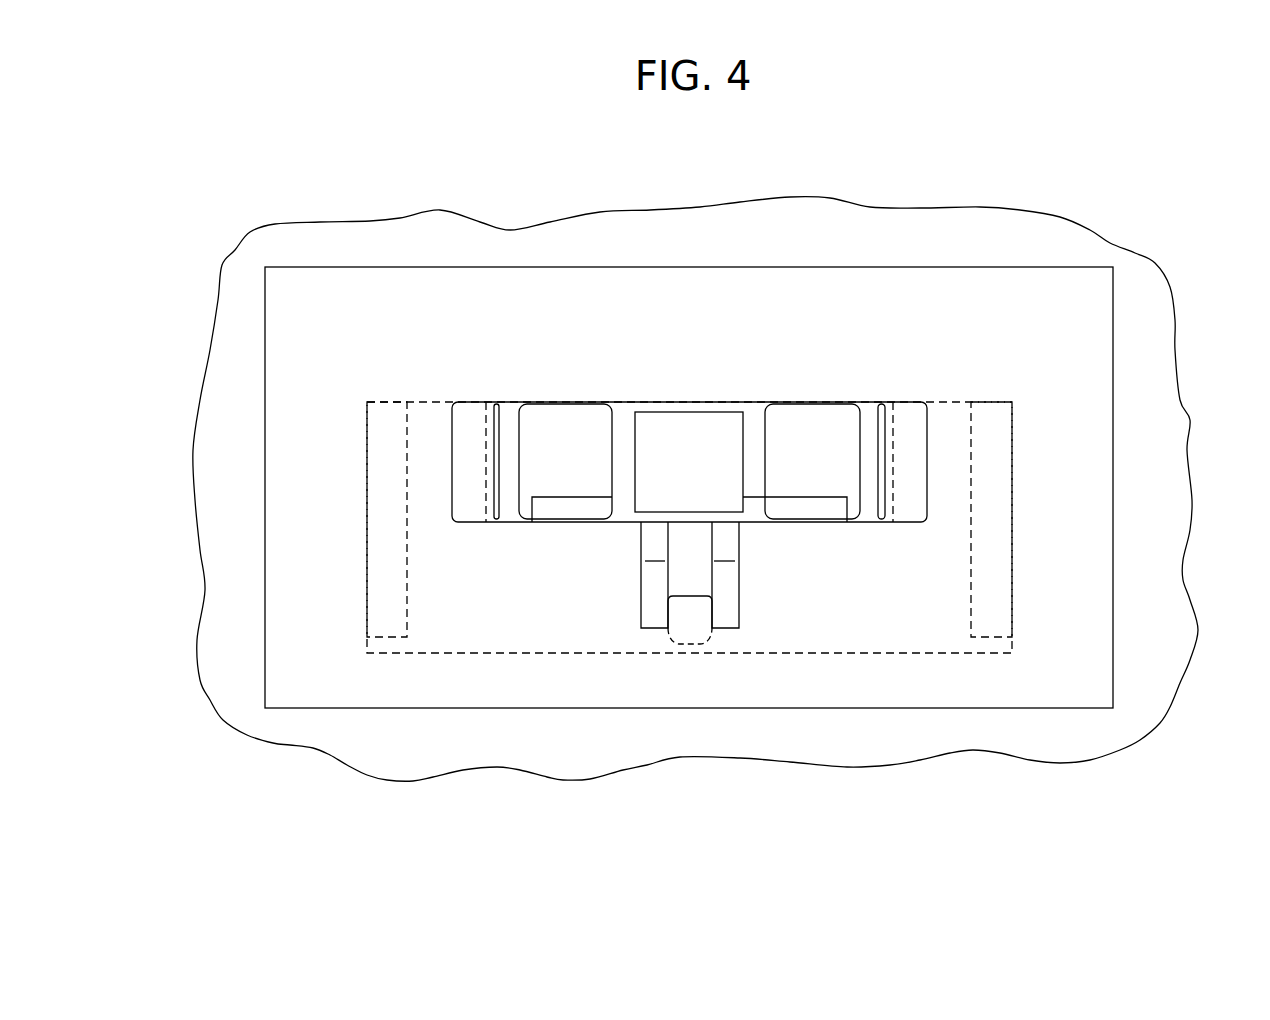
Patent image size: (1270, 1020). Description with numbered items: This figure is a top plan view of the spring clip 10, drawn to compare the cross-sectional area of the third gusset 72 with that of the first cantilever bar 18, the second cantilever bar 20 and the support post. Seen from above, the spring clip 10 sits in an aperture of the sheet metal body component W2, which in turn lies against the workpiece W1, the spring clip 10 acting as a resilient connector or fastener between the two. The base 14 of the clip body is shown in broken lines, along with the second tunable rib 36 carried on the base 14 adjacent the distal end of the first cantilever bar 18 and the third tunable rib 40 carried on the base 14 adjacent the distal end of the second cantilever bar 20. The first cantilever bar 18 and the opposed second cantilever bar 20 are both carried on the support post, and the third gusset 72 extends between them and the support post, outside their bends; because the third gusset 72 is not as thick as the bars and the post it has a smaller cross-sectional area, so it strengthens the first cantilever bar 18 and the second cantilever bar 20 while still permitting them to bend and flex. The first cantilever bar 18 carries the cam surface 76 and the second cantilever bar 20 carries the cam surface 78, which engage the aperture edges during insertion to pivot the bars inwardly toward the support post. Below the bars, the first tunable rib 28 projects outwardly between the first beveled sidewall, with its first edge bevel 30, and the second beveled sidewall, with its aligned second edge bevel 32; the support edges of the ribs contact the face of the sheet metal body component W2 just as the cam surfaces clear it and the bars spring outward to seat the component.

The spring clip 10 is at (700, 480).
The base 14 is at (507, 652).
The first cantilever bar 18 is at (551, 450).
The second cantilever bar 20 is at (820, 440).
The first tunable rib 28 is at (687, 617).
The first edge bevel 30 is at (652, 594).
The second edge bevel 32 is at (726, 594).
The second tunable rib 36 is at (367, 522).
The third tunable rib 40 is at (997, 525).
The third gusset 72 is at (685, 442).
The cam surface 76 is at (472, 442).
The cam surface 78 is at (912, 440).
The workpiece W1 is at (997, 233).
The sheet metal body component W2 is at (1040, 293).